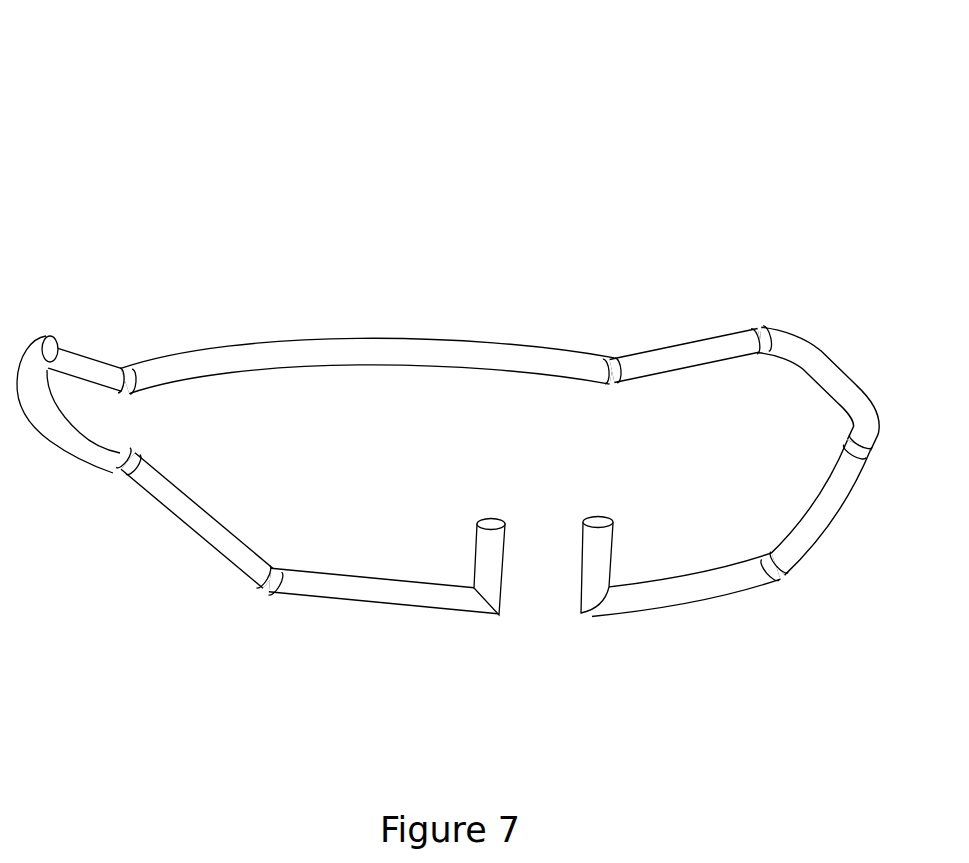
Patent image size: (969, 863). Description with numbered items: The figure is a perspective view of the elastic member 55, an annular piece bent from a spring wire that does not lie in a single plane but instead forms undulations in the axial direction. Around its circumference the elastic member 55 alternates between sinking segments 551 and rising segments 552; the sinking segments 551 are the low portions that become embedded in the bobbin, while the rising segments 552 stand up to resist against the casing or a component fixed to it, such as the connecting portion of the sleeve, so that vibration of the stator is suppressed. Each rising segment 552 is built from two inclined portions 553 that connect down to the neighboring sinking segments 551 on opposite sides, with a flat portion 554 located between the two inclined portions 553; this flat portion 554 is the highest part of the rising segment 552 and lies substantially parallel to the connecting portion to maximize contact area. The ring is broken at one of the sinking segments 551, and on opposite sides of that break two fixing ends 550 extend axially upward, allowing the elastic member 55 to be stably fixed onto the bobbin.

The elastic member 55 is at (444, 318).
The fixing ends 550 is at (487, 538).
The sinking segments 551 is at (360, 343).
The rising segments 552 is at (772, 360).
The inclined portions 553 is at (680, 353).
The flat portion 554 is at (808, 357).